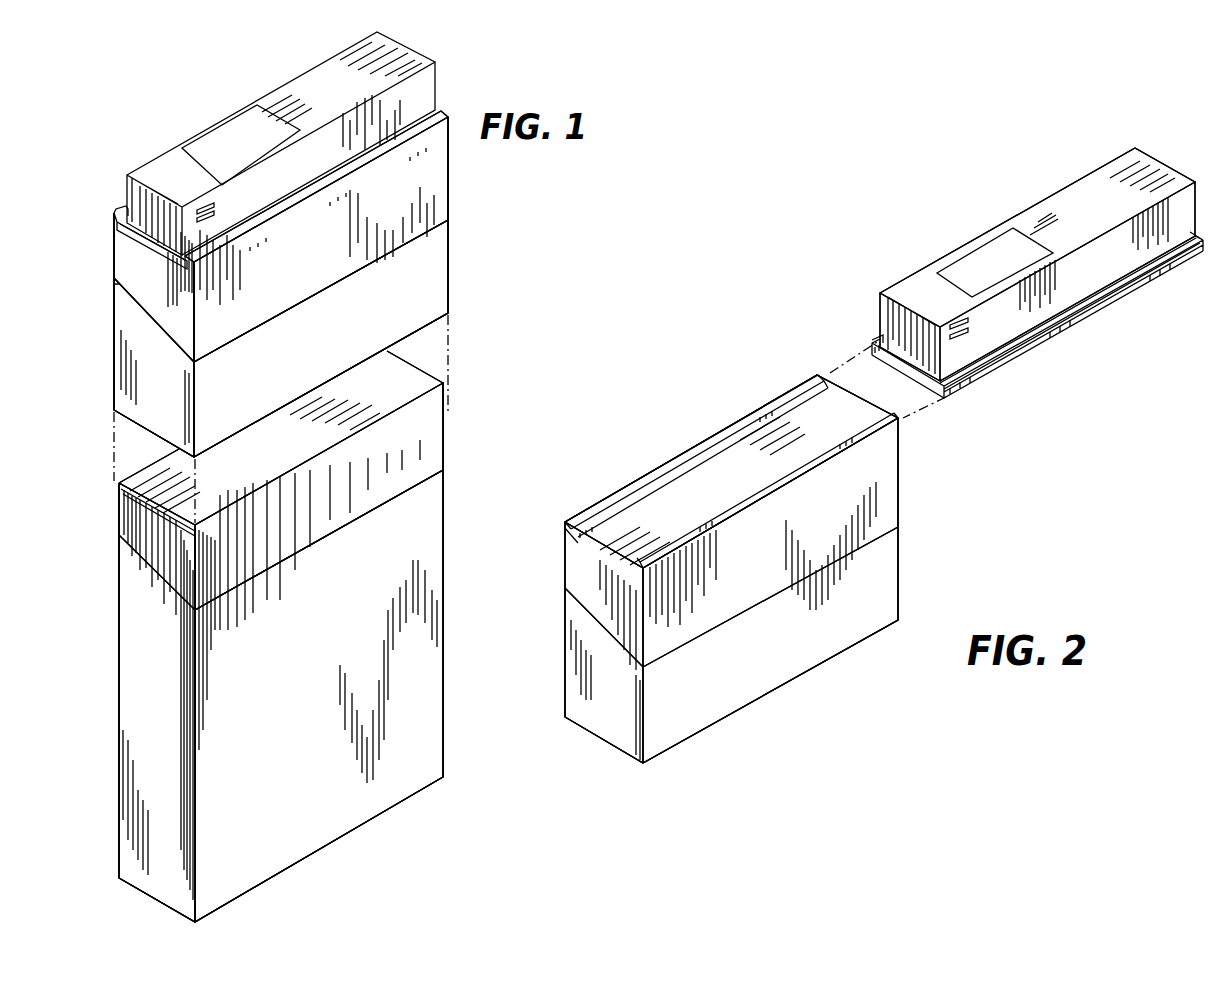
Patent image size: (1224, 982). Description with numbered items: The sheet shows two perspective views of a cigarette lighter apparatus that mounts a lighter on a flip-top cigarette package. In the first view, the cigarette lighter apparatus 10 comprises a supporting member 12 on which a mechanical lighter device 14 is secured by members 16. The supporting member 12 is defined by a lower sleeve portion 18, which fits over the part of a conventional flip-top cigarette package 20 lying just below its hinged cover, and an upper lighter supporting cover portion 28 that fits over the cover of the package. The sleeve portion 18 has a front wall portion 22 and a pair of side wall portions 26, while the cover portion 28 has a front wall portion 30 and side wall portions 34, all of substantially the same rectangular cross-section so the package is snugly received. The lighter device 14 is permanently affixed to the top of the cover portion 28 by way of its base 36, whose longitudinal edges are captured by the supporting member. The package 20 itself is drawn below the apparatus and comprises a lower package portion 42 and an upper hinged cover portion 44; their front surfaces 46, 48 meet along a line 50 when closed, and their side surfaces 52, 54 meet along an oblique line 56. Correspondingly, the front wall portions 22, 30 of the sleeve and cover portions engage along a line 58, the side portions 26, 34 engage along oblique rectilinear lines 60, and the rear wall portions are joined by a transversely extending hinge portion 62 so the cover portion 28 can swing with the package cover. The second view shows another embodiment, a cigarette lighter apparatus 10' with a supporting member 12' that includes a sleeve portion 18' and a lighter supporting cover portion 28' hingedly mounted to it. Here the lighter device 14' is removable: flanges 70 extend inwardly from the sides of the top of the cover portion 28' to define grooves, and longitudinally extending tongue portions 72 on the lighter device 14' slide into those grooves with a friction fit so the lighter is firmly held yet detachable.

In FIG. 1, the cigarette lighter apparatus 10 is at (338, 519).
In FIG. 1, the supporting member 12 is at (323, 317).
In FIG. 1, the mechanical lighter device 14 is at (281, 143).
In FIG. 1, the members 16 is at (117, 225).
In FIG. 1, the lower sleeve portion 18 is at (247, 338).
In FIG. 1, the flip-top cigarette package 20 is at (103, 695).
In FIG. 1, the front wall portion of sleeve portion 22 is at (275, 373).
In FIG. 1, the side wall portion of sleeve portion 26 is at (148, 401).
In FIG. 1, the lighter supporting cover portion 28 is at (311, 236).
In FIG. 1, the front wall portion of cover portion 30 is at (294, 260).
In FIG. 1, the side wall portion of cover portion 34 is at (127, 290).
In FIG. 1, the base 36 is at (142, 240).
In FIG. 1, the lower package portion 42 is at (119, 768).
In FIG. 1, the upper hinged cover portion 44 is at (113, 518).
In FIG. 1, the front surface of package portion 46 is at (282, 720).
In FIG. 1, the front surface of cover portion 48 is at (338, 507).
In FIG. 1, the line 50 is at (307, 550).
In FIG. 1, the side surface of package portion 52 is at (146, 720).
In FIG. 1, the side surface of cover portion 54 is at (155, 545).
In FIG. 1, the line 56 is at (148, 570).
In FIG. 1, the line 58 is at (292, 308).
In FIG. 1, the rectilinear line 60 is at (164, 348).
In FIG. 1, the hinge portion 62 is at (113, 278).
In FIG. 2, the cigarette lighter apparatus 10' is at (880, 455).
In FIG. 2, the supporting member 12' is at (767, 569).
In FIG. 2, the lighter device 14' is at (1037, 255).
In FIG. 2, the sleeve portion 18' is at (695, 645).
In FIG. 2, the lighter supporting cover portion 28' is at (704, 522).
In FIG. 2, the flanges 70 is at (603, 505).
In FIG. 2, the tongue portions 72 is at (1003, 352).